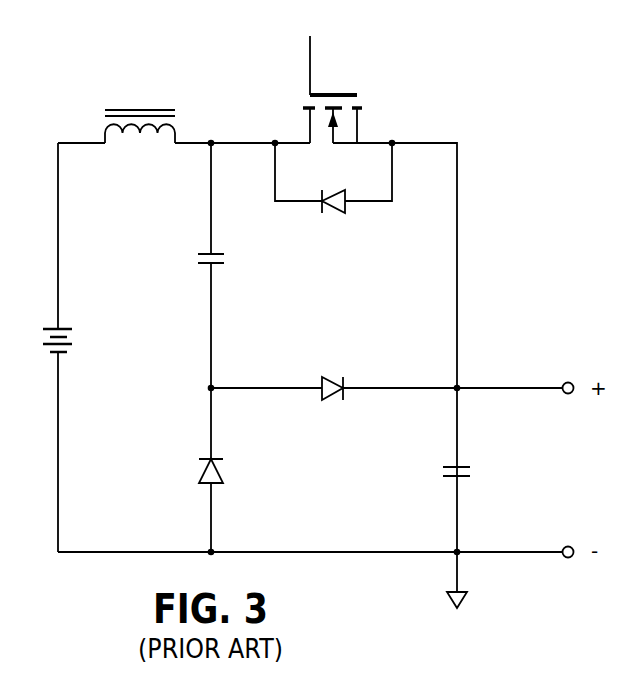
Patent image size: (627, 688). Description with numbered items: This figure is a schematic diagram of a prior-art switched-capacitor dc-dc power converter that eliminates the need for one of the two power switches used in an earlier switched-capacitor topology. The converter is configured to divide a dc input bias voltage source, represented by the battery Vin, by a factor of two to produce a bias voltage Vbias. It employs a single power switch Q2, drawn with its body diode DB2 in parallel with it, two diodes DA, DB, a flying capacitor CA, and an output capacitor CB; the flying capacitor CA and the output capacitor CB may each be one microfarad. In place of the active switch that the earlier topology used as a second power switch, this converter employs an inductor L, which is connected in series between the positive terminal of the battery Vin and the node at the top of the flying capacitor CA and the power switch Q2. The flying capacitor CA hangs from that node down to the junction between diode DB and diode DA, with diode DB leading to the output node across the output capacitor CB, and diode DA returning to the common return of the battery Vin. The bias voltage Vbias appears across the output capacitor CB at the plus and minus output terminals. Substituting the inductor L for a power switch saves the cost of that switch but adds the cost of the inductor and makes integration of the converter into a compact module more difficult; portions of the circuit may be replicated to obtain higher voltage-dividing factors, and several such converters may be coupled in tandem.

The inductor L is at (140, 110).
The power switch Q2 is at (332, 89).
The body diode DB2 is at (333, 198).
The flying capacitor CA is at (230, 267).
The diode DB is at (336, 368).
The diode DA is at (230, 477).
The output capacitor CB is at (475, 478).
The battery Vin is at (76, 337).
The bias voltage Vbias is at (574, 472).